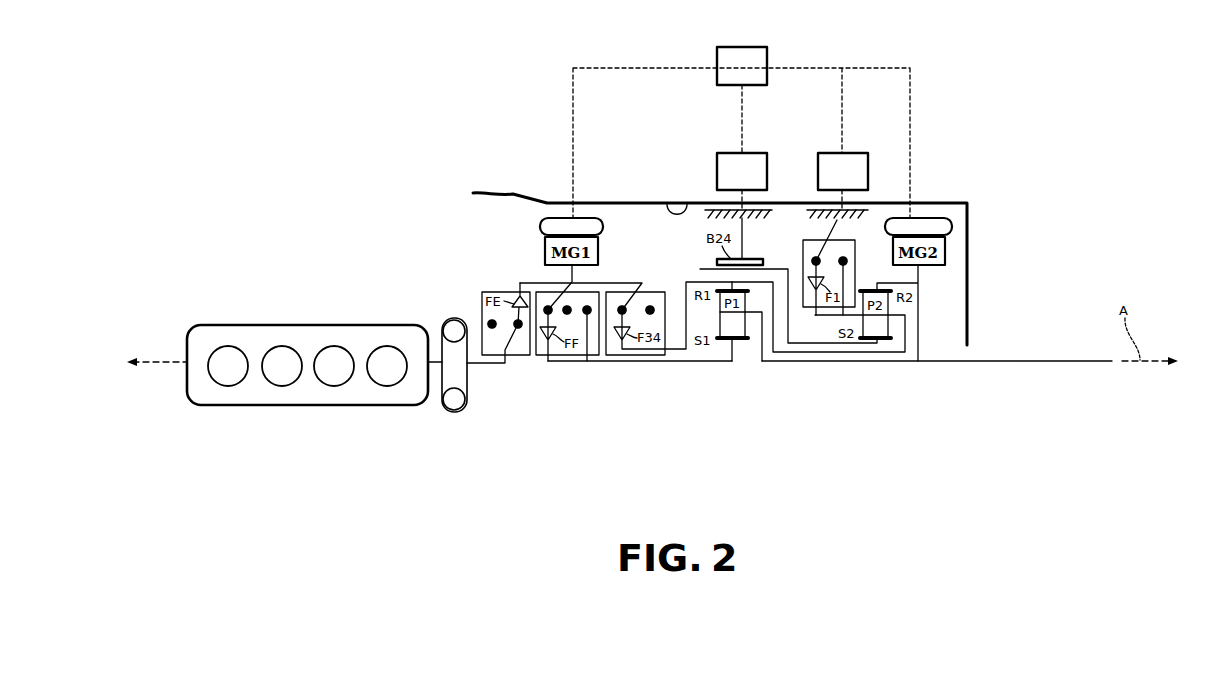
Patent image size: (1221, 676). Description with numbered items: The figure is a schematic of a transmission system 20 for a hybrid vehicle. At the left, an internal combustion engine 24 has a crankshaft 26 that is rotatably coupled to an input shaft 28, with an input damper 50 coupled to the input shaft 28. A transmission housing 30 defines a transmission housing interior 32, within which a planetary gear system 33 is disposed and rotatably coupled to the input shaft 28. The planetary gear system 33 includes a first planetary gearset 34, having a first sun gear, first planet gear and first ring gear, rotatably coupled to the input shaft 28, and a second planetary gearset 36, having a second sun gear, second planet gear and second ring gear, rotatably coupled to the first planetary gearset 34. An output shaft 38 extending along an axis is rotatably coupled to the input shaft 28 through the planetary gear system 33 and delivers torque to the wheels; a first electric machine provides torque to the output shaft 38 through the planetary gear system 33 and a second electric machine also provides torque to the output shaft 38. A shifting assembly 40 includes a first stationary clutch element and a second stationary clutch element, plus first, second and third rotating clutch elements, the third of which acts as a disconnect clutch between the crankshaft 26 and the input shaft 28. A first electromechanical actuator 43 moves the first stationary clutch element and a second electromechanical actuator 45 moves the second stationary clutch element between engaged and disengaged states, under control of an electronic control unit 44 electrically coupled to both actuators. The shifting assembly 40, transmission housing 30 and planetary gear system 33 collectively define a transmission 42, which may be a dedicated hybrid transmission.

The transmission system 20 is at (512, 153).
The internal combustion engine 24 is at (278, 325).
The crankshaft 26 is at (436, 365).
The input shaft 28 is at (490, 365).
The transmission housing 30 is at (630, 203).
The transmission housing interior 32 is at (682, 203).
The planetary gear system 33 is at (812, 378).
The first planetary gearset 34 is at (731, 378).
The second planetary gearset 36 is at (890, 378).
The output shaft 38 is at (1060, 362).
The shifting assembly 40 is at (926, 125).
The transmission 42 is at (970, 173).
The first electromechanical actuator 43 is at (742, 171).
The electronic control unit 44 is at (742, 66).
The second electromechanical actuator 45 is at (843, 171).
The input damper 50 is at (446, 318).